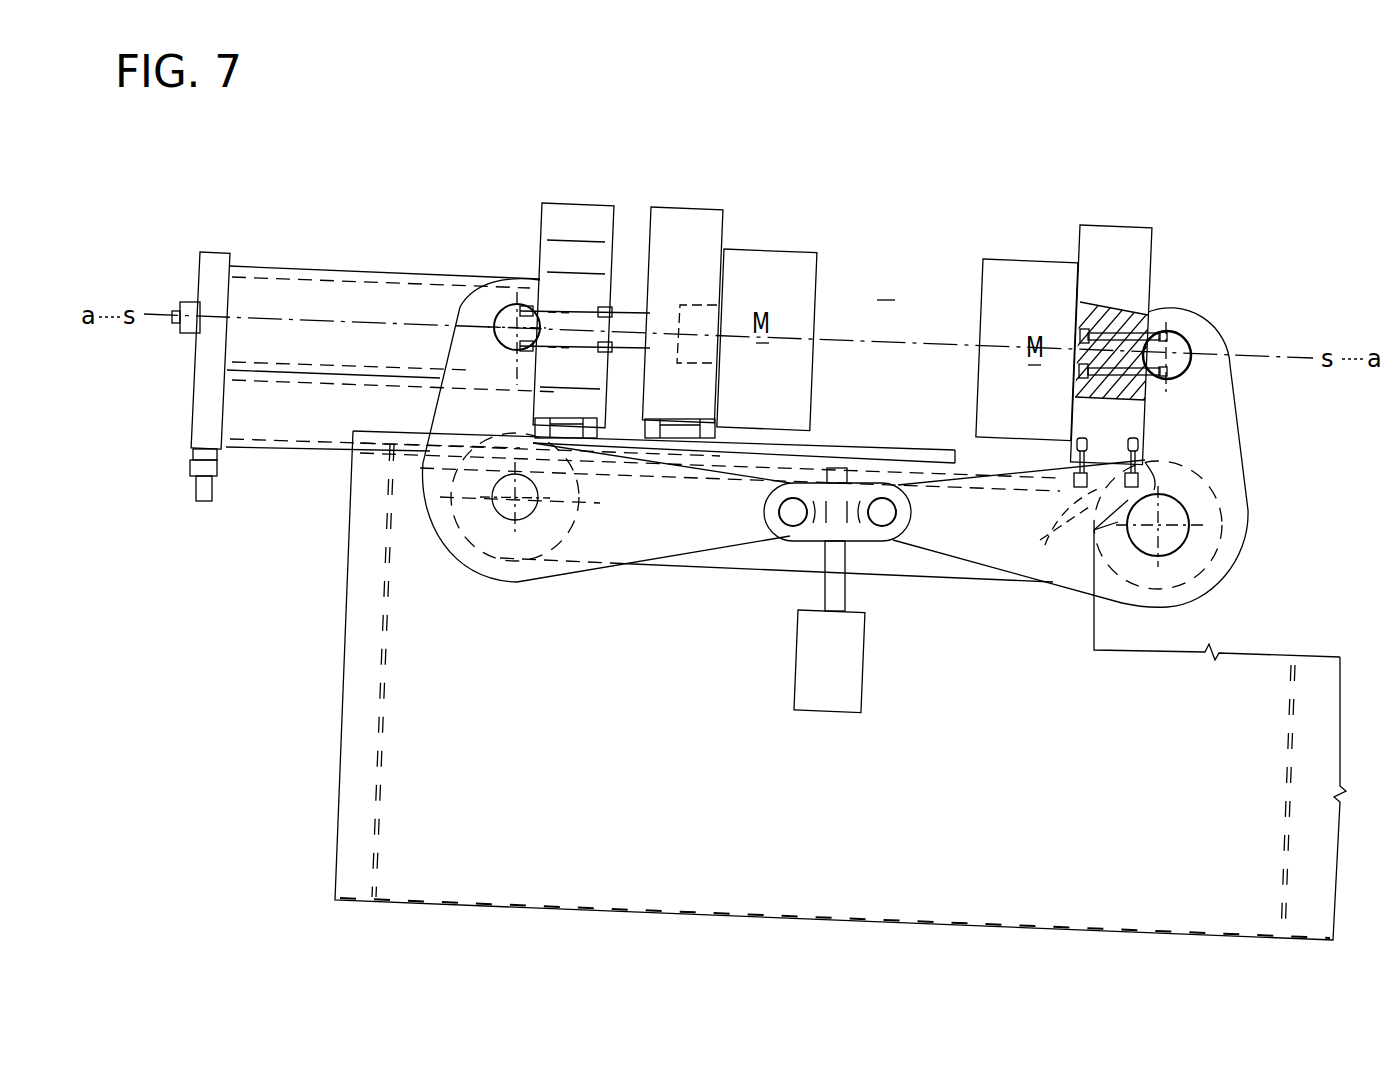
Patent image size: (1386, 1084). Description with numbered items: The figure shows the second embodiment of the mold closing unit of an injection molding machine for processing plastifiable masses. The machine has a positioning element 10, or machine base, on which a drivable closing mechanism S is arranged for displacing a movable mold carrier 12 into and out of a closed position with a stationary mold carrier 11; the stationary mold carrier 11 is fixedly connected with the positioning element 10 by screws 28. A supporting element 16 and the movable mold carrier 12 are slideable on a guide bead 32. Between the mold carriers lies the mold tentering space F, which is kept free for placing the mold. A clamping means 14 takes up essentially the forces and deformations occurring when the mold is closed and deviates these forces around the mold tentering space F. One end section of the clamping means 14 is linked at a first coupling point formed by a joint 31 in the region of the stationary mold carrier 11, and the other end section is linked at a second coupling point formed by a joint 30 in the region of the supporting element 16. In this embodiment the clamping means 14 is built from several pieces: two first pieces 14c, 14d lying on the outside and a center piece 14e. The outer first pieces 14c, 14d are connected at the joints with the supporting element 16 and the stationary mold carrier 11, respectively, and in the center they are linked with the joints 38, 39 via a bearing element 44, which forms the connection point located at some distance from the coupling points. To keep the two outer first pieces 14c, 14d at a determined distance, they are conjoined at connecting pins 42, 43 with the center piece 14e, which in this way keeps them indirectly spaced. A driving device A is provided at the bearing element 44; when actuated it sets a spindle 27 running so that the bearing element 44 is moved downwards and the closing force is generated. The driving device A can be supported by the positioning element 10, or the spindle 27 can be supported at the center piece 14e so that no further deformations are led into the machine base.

The positioning element 10 is at (833, 776).
The stationary mold carrier 11 is at (1105, 240).
The movable mold carrier 12 is at (683, 225).
The clamping means 14 is at (931, 582).
The first piece 14c is at (656, 524).
The first piece 14d is at (1084, 565).
The center piece 14e is at (948, 570).
The supporting element 16 is at (571, 218).
The spindle 27 is at (835, 588).
The screws 28 is at (1063, 536).
The joint 30 is at (503, 277).
The joint 31 is at (1188, 300).
The guide bead 32 is at (877, 445).
The joint 38 is at (796, 505).
The joint 39 is at (884, 503).
The connecting pin 42 is at (1173, 535).
The connecting pin 43 is at (503, 520).
The bearing element 44 is at (818, 530).
The closing mechanism S is at (389, 268).
The mold tentering space F is at (886, 283).
The driving device A is at (847, 693).